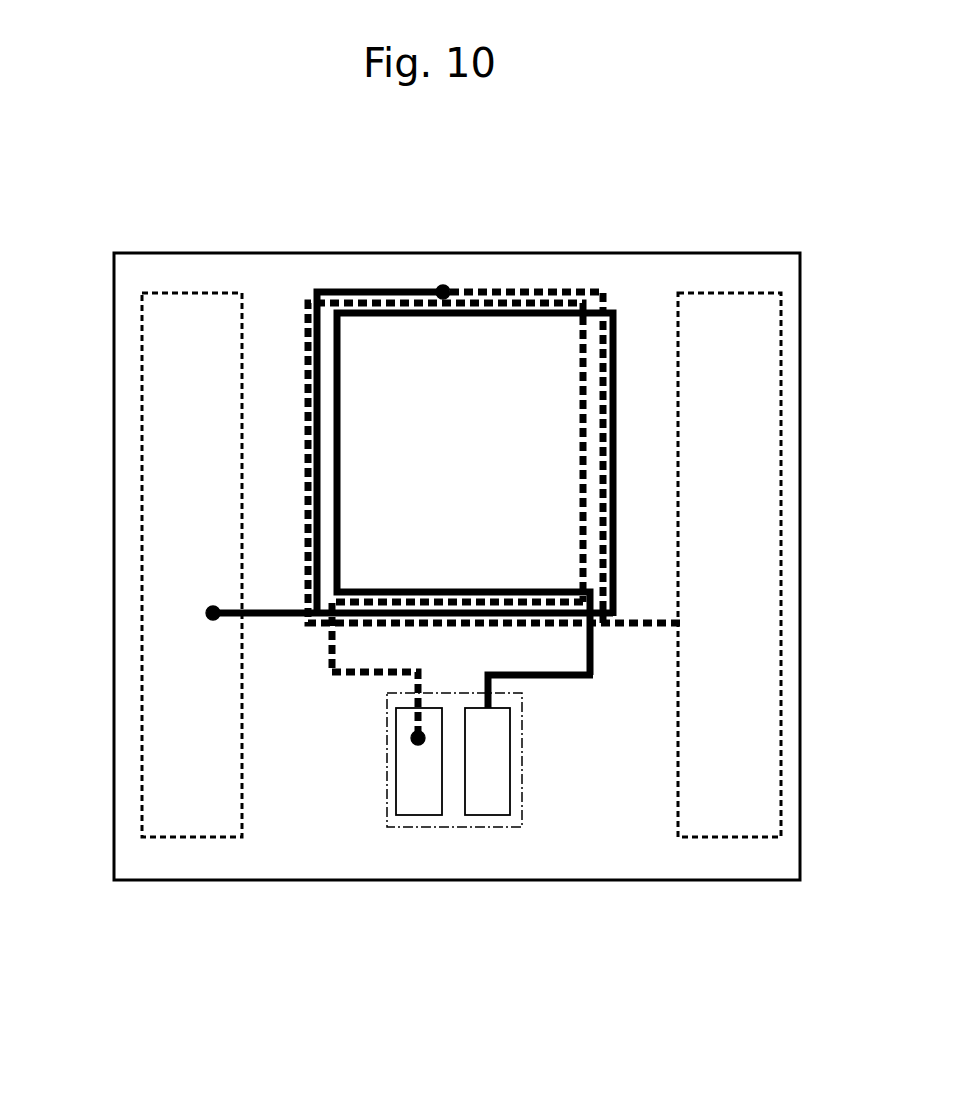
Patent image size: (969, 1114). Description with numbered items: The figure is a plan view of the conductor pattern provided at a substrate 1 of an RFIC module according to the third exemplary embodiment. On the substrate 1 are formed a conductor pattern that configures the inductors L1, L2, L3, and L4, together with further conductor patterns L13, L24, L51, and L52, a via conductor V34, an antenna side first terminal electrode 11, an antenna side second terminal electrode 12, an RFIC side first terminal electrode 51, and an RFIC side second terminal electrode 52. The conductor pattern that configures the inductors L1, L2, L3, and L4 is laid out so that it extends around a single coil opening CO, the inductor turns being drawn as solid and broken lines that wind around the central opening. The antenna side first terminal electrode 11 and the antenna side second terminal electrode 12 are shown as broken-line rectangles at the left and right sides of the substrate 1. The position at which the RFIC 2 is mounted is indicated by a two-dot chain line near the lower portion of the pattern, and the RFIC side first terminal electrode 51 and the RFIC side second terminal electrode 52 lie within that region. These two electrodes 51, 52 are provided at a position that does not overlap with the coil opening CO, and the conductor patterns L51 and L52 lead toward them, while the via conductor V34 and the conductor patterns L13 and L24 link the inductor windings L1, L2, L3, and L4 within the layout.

The substrate 1 is at (792, 273).
The antenna side first terminal electrode 11 is at (160, 555).
The antenna side second terminal electrode 12 is at (755, 553).
The RFIC 2 is at (527, 807).
The RFIC side first terminal electrode 51 is at (490, 805).
The RFIC side second terminal electrode 52 is at (419, 805).
The coil opening CO is at (443, 484).
The inductor L1 is at (617, 592).
The inductor L2 is at (352, 627).
The inductor L3 is at (375, 288).
The inductor L4 is at (603, 290).
The conductor pattern L13 is at (265, 610).
The conductor pattern L24 is at (615, 622).
The conductor pattern L51 is at (551, 677).
The conductor pattern L52 is at (372, 677).
The via conductor V34 is at (442, 283).